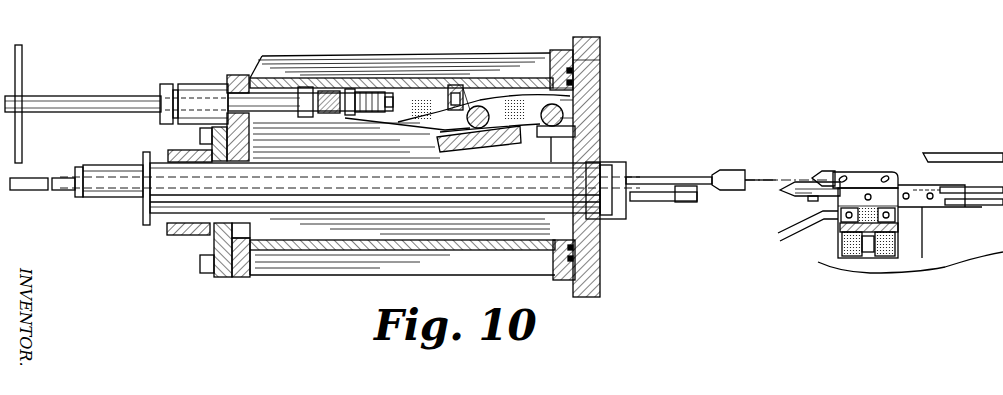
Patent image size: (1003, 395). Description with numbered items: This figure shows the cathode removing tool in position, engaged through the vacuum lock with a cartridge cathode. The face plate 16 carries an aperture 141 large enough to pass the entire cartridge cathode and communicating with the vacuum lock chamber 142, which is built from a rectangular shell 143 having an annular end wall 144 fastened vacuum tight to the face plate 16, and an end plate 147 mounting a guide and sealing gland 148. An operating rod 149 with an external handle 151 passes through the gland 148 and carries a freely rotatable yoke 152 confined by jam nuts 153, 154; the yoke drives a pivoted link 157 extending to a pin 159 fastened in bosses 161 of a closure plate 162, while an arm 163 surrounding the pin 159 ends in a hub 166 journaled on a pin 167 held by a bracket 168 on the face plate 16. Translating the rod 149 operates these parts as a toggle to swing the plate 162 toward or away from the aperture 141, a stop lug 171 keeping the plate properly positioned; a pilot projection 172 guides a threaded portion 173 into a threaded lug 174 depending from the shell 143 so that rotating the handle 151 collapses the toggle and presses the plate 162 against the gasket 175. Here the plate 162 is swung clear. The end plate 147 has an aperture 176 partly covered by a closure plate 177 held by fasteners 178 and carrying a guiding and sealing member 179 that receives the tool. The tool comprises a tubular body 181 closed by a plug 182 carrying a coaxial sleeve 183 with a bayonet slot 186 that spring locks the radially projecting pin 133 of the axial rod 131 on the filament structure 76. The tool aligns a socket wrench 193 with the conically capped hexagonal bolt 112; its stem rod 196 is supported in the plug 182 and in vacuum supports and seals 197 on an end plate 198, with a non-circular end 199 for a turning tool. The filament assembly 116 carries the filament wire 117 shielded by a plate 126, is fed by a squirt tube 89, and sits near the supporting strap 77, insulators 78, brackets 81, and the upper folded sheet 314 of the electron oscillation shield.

The face plate 16 is at (596, 70).
The filament structure 76 is at (872, 172).
The supporting strap 77 is at (840, 228).
The insulators 78 is at (896, 246).
The brackets 81 is at (883, 258).
The squirt tube 89 is at (786, 238).
The conically capped hexagonal bolt 112 is at (830, 171).
The filament assembly 116 is at (906, 185).
The filament wire 117 is at (982, 205).
The plate 126 is at (986, 187).
The axial rod 131 is at (793, 192).
The radially projecting pin 133 is at (812, 200).
The aperture 141 is at (612, 162).
The vacuum lock chamber 142 is at (397, 57).
The rectangular shell 143 is at (481, 105).
The annular end wall 144 is at (563, 49).
The end plate 147 is at (239, 74).
The guide and sealing gland 148 is at (196, 83).
The operating rod 149 is at (104, 96).
The external handle 151 is at (22, 68).
The yoke 152 is at (330, 90).
The jam nut 153 is at (307, 86).
The jam nut 154 is at (352, 88).
The pivoted link 157 is at (455, 84).
The pin 159 is at (505, 96).
The bosses 161 is at (548, 103).
The closure plate 162 is at (440, 147).
The arm 163 is at (590, 36).
The hub 166 is at (568, 118).
The pin 167 is at (570, 100).
The bracket 168 is at (575, 88).
The stop lug 171 is at (440, 134).
The pilot projection 172 is at (382, 100).
The threaded portion 173 is at (367, 113).
The threaded lug 174 is at (470, 86).
The gasket 175 is at (600, 232).
The aperture 176 is at (240, 236).
The closure plate 177 is at (226, 278).
The fasteners 178 is at (200, 263).
The guiding and sealing member 179 is at (182, 239).
The tubular body 181 is at (348, 213).
The plug 182 is at (640, 177).
The coaxial sleeve 183 is at (668, 190).
The bayonet slot 186 is at (684, 204).
The socket wrench 193 is at (830, 182).
The stem rod 196 is at (724, 170).
The vacuum supports and seals 197 is at (118, 200).
The end plate 198 is at (143, 222).
The non-circular end 199 is at (28, 178).
The upper folded sheet 314 is at (945, 153).